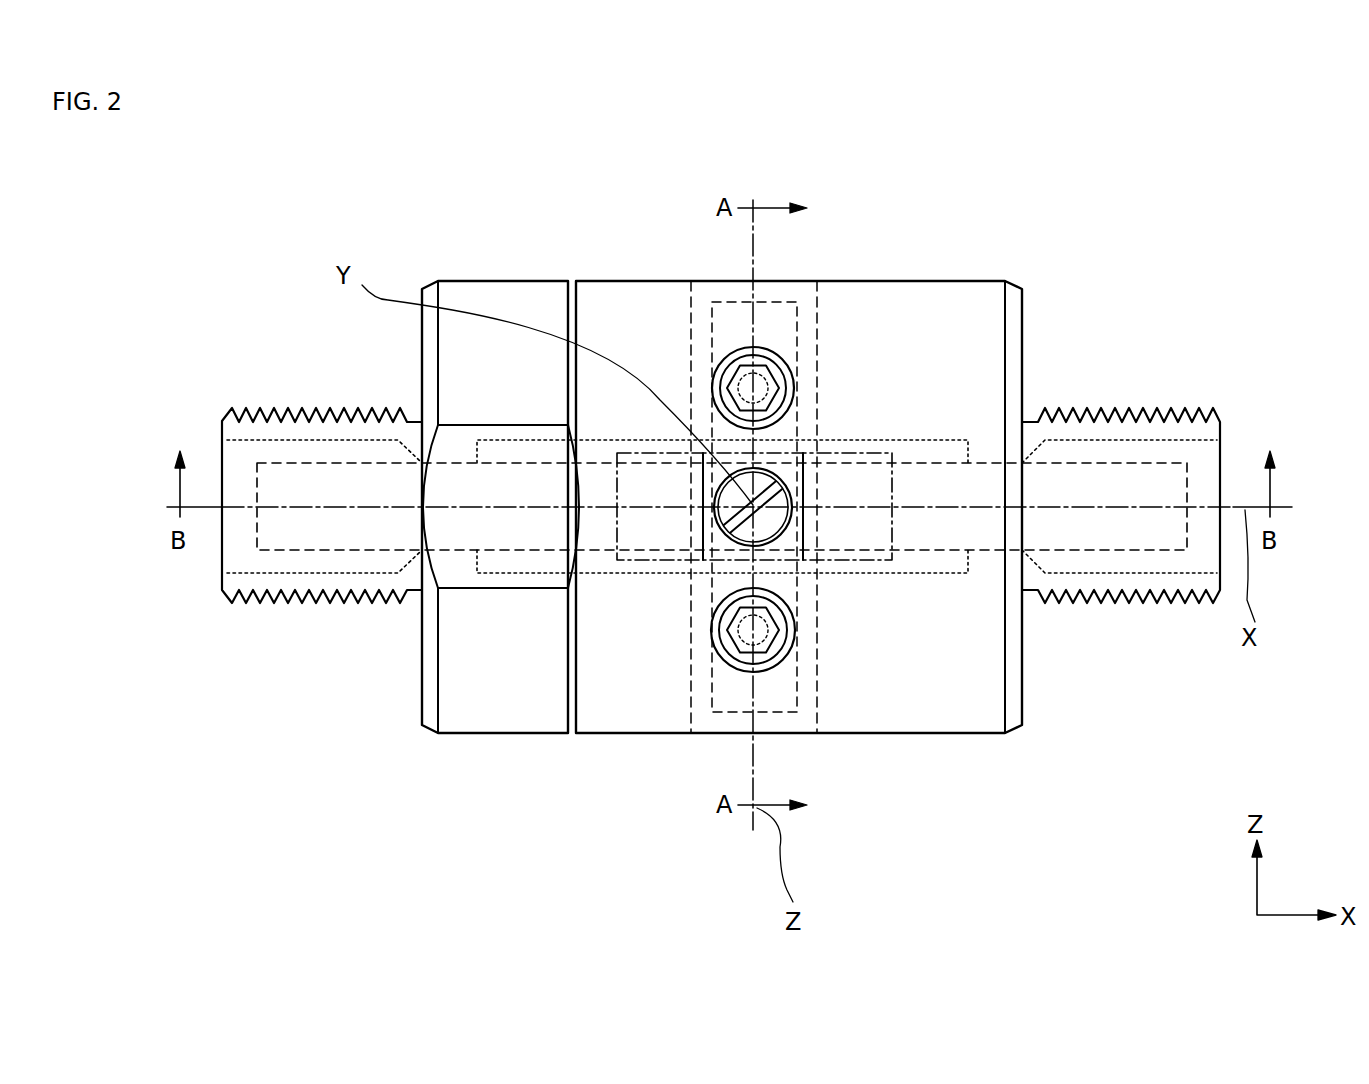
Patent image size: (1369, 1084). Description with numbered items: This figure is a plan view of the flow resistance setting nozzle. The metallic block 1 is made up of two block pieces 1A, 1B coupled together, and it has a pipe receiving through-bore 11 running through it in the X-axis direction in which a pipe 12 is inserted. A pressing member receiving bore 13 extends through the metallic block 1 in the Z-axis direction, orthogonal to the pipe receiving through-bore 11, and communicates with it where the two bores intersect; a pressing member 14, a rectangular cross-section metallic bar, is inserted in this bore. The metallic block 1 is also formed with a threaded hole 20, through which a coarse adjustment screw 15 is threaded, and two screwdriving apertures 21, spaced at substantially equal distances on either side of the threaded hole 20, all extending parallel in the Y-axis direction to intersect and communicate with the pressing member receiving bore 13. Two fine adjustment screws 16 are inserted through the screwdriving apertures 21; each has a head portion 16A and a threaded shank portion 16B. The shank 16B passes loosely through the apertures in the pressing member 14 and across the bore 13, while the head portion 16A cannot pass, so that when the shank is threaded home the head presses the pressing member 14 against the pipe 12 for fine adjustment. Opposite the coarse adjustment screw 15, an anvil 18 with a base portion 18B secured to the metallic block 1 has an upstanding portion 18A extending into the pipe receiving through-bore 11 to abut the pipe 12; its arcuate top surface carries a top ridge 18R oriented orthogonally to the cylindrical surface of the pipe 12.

The metallic block 1 is at (597, 162).
The block piece 1A is at (492, 300).
The block piece 1B is at (614, 300).
The pipe receiving through-bore 11 is at (288, 440).
The pipe 12 is at (1133, 463).
The pressing member receiving bore 13 is at (803, 302).
The pressing member 14 is at (735, 352).
The coarse adjustment screw 15 is at (777, 520).
The fine adjustment screws 16 is at (857, 140).
The head portion 16A is at (740, 347).
The threaded shank portion 16B is at (770, 368).
The anvil 18 is at (500, 843).
The upstanding portion 18A is at (703, 512).
The base portion 18B is at (633, 562).
The top ridge 18R is at (747, 540).
The threaded hole 20 is at (758, 500).
The screwdriving apertures 21 is at (716, 365).